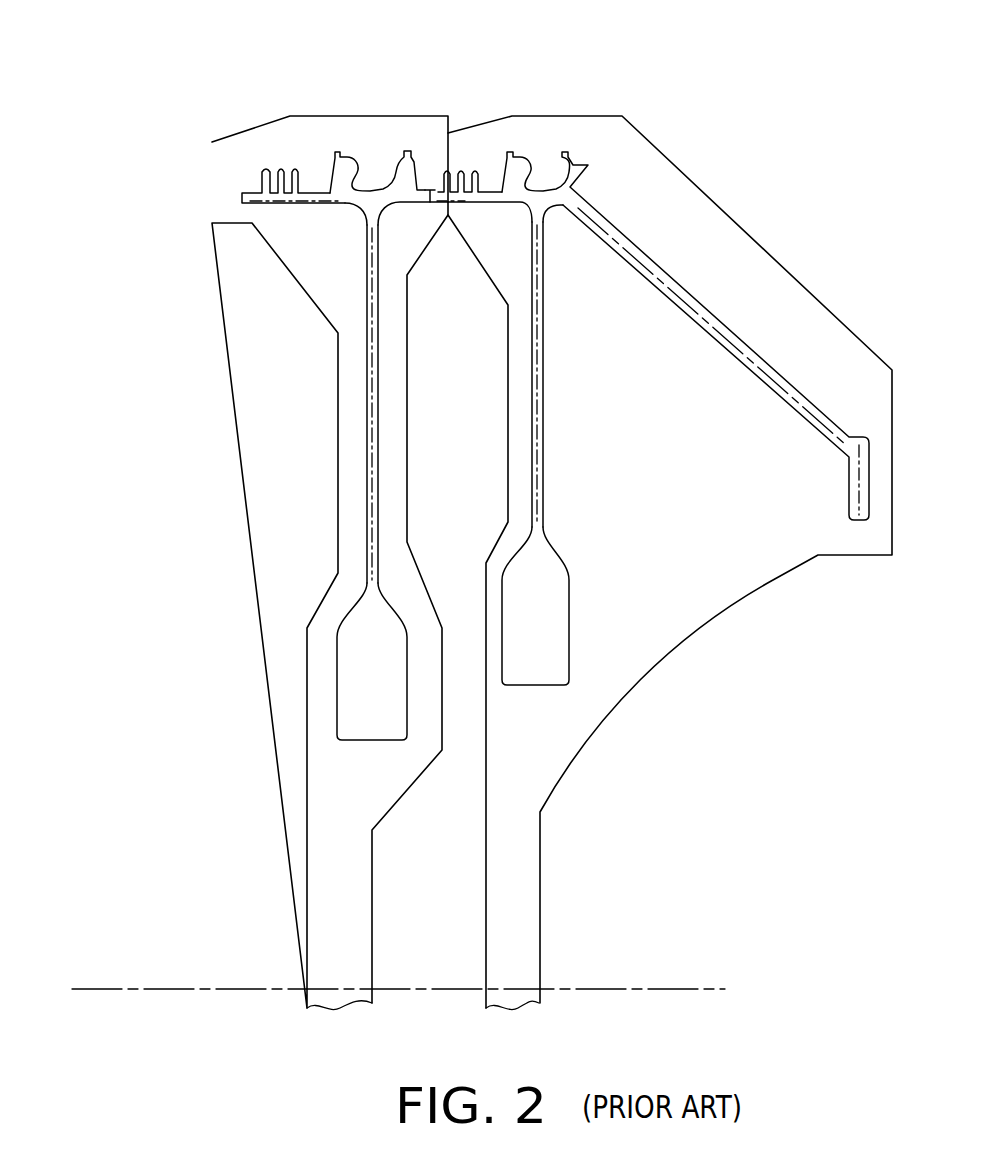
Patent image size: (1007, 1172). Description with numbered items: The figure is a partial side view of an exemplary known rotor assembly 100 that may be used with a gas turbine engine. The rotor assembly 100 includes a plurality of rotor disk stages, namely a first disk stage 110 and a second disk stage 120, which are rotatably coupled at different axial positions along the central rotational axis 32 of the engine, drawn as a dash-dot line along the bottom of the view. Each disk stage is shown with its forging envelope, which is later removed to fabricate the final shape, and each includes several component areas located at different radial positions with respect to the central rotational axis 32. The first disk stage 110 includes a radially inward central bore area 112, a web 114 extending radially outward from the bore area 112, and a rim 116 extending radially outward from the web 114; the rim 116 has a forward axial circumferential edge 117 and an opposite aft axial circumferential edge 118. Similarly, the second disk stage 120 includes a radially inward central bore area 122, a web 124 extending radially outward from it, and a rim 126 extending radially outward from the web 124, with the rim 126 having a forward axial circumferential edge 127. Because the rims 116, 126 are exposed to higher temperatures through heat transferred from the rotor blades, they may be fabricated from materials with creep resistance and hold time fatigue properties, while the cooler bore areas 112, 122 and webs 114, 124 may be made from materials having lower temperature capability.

The rotor assembly 100 is at (196, 64).
The central rotational axis 32 is at (180, 988).
The first disk stage 110 is at (299, 541).
The central bore area 112 is at (372, 703).
The web 114 is at (372, 490).
The rim 116 is at (373, 180).
The forward axial circumferential edge 117 is at (262, 195).
The aft axial circumferential edge 118 is at (428, 186).
The second disk stage 120 is at (664, 539).
The central bore area 122 is at (540, 665).
The web 124 is at (537, 450).
The rim 126 is at (556, 188).
The forward axial circumferential edge 127 is at (493, 197).